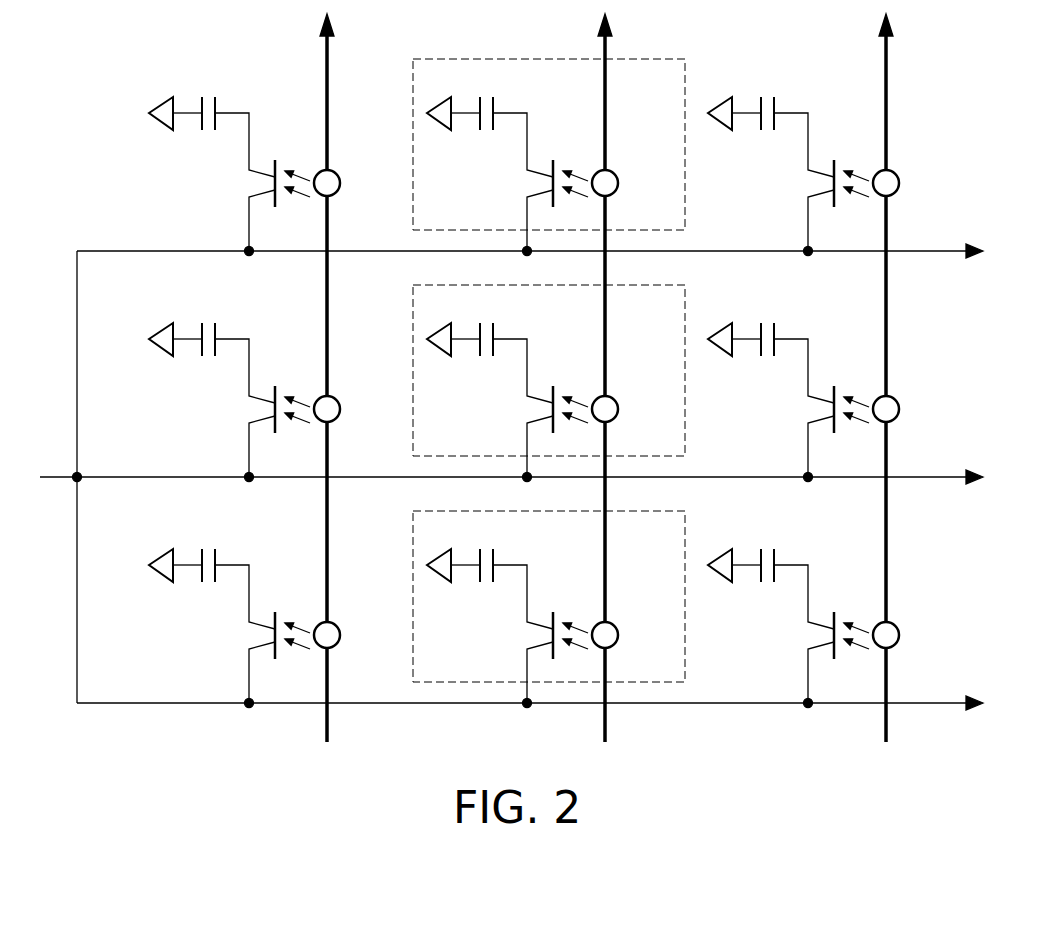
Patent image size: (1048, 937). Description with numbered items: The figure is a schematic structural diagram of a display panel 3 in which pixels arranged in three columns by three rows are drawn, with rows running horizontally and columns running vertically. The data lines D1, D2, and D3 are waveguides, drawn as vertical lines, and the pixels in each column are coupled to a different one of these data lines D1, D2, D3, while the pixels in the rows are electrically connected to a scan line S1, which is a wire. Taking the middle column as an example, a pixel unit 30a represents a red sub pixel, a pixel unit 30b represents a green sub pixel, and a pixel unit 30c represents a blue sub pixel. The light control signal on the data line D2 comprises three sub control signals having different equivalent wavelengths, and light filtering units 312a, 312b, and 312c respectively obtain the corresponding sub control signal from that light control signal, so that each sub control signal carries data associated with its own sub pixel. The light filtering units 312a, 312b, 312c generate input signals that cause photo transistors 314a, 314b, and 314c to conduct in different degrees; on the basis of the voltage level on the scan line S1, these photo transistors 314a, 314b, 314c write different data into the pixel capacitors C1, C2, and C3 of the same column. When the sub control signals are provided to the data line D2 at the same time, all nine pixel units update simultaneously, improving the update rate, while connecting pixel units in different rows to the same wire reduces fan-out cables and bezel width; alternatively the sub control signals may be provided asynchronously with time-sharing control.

The light sensing array 3 is at (1045, 37).
The pixel unit 30a is at (413, 587).
The pixel unit 30b is at (413, 361).
The pixel unit 30c is at (413, 135).
The light filtering unit 312a is at (614, 626).
The light filtering unit 312b is at (614, 400).
The light filtering unit 312c is at (614, 174).
The photo transistor 314a is at (526, 634).
The photo transistor 314b is at (526, 408).
The photo transistor 314c is at (526, 182).
The pixel capacitor C1 is at (463, 552).
The pixel capacitor C2 is at (463, 326).
The pixel capacitor C3 is at (463, 100).
The scan line S1 is at (494, 479).
The data line D1 is at (324, 393).
The data line D2 is at (603, 393).
The data line D3 is at (883, 393).